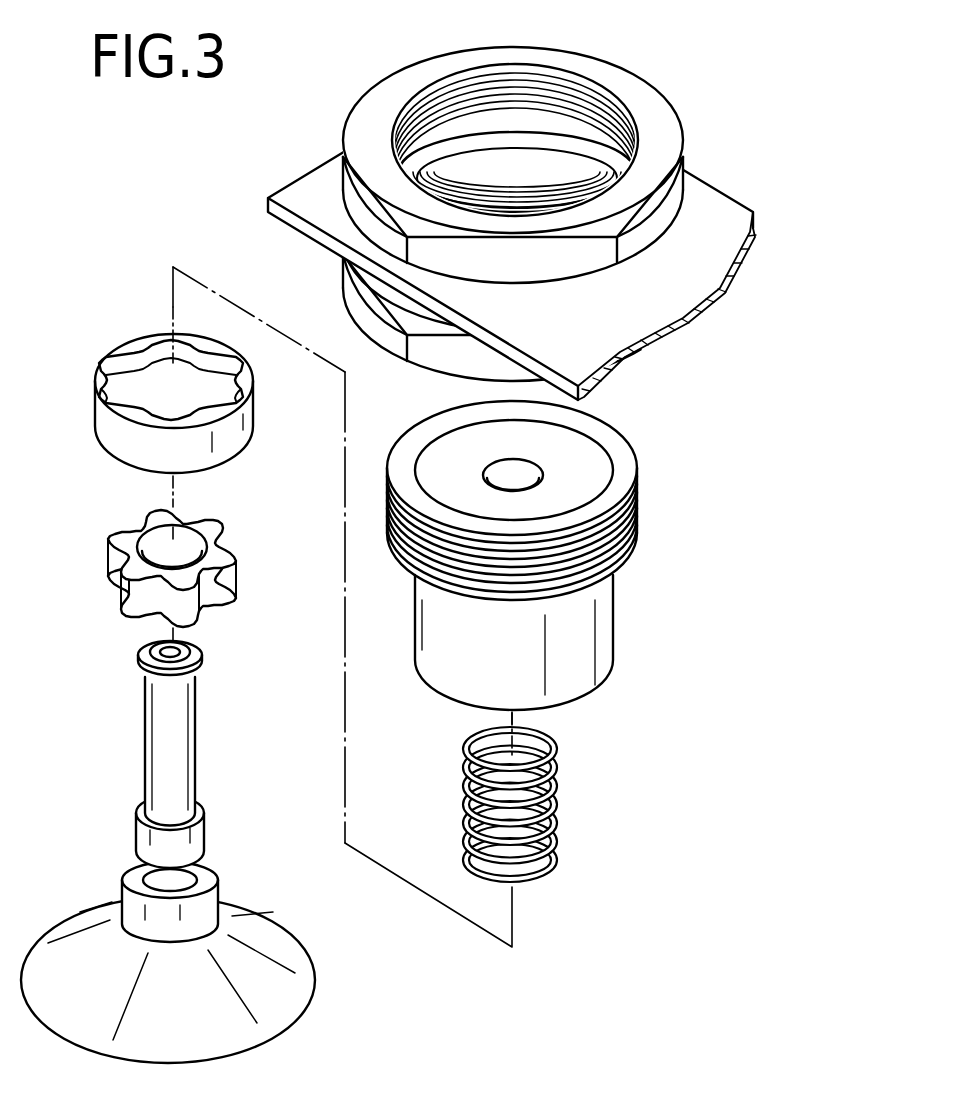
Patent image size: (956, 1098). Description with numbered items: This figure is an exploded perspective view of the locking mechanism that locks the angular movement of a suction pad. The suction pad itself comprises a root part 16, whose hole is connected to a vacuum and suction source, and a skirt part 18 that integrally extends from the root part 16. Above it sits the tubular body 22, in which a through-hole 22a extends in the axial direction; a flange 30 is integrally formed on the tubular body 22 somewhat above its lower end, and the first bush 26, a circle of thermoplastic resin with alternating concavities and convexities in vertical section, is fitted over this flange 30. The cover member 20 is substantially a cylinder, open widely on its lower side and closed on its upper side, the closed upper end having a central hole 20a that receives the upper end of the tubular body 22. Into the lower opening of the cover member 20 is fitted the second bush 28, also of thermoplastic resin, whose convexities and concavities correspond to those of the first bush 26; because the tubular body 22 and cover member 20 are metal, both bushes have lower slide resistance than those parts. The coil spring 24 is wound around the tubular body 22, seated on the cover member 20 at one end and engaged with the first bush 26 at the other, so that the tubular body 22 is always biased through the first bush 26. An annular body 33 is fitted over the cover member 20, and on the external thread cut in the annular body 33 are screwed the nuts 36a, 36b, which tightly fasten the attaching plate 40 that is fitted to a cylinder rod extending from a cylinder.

The root part 16 is at (195, 917).
The skirt part 18 is at (280, 953).
The cover member 20 is at (528, 548).
The hole 20a is at (508, 462).
The tubular body 22 is at (218, 726).
The through-hole 22a is at (188, 651).
The coil spring 24 is at (557, 808).
The first bush 26 is at (223, 555).
The second bush 28 is at (223, 407).
The flange 30 is at (180, 843).
The annular body 33 is at (637, 525).
The nut 36a is at (385, 97).
The nut 36b is at (350, 303).
The attaching plate 40 is at (318, 193).